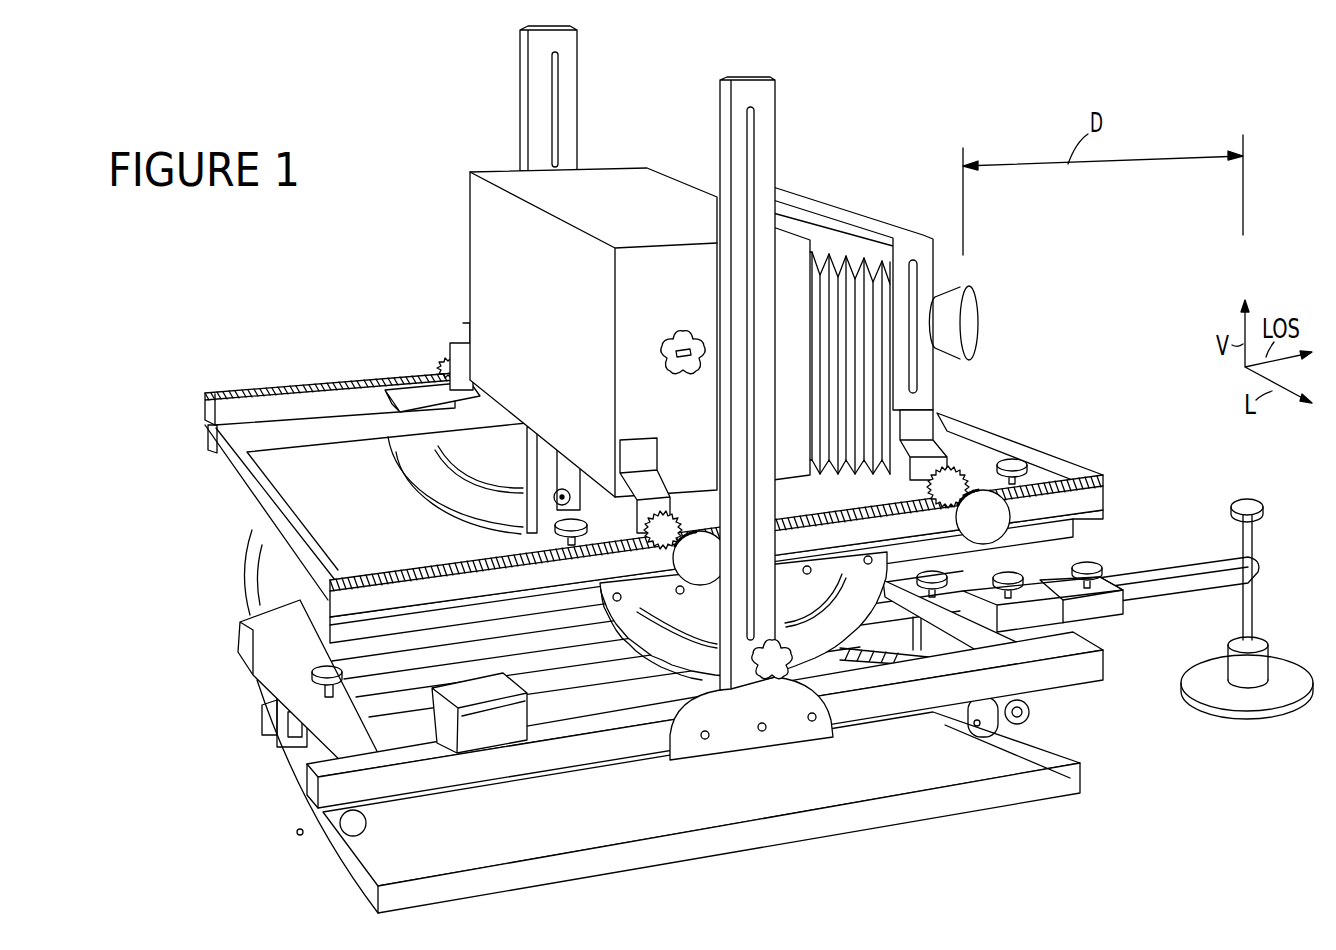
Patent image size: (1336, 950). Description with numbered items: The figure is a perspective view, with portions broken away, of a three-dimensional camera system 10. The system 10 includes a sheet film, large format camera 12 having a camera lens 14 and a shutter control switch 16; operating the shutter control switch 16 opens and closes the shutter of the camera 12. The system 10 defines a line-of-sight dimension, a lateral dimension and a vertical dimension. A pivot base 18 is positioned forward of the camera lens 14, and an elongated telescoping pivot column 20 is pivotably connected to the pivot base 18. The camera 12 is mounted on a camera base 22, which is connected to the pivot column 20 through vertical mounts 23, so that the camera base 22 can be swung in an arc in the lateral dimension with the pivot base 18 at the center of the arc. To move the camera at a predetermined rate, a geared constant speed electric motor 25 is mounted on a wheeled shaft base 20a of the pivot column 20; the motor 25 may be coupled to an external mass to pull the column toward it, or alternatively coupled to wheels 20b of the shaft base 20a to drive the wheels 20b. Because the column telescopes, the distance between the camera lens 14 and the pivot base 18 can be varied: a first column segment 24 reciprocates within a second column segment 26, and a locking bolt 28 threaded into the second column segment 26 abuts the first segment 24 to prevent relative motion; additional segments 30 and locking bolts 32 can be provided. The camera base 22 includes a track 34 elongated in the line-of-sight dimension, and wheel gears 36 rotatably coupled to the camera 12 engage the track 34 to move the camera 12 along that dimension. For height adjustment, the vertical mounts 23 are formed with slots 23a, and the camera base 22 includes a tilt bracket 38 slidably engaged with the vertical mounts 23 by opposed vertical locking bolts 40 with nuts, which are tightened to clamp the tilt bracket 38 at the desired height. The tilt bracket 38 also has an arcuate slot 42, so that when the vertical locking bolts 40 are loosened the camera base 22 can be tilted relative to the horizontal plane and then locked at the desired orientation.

The 3-D camera system 10 is at (895, 194).
The large format camera 12 is at (834, 256).
The camera lens 14 is at (980, 324).
The shutter control switch 16 is at (690, 330).
The pivot base 18 is at (1280, 668).
The telescoping pivot column 20 is at (1130, 600).
The wheeled shaft base 20a is at (1062, 678).
The wheels 20b is at (1022, 722).
The camera base 22 is at (308, 428).
The vertical mounts 23 is at (572, 97).
The slots 23a is at (754, 149).
The first column segment 24 is at (1178, 575).
The geared constant speed electric motor 25 is at (482, 742).
The second column segment 26 is at (1057, 590).
The locking bolt 28 is at (1090, 566).
The additional segments 30 is at (1062, 608).
The locking bolts 32 is at (1007, 575).
The track 34 is at (387, 572).
The wheel gears 36 is at (447, 357).
The tilt bracket 38 is at (818, 640).
The vertical locking bolts 40 is at (780, 678).
The arcuate slot 42 is at (680, 632).